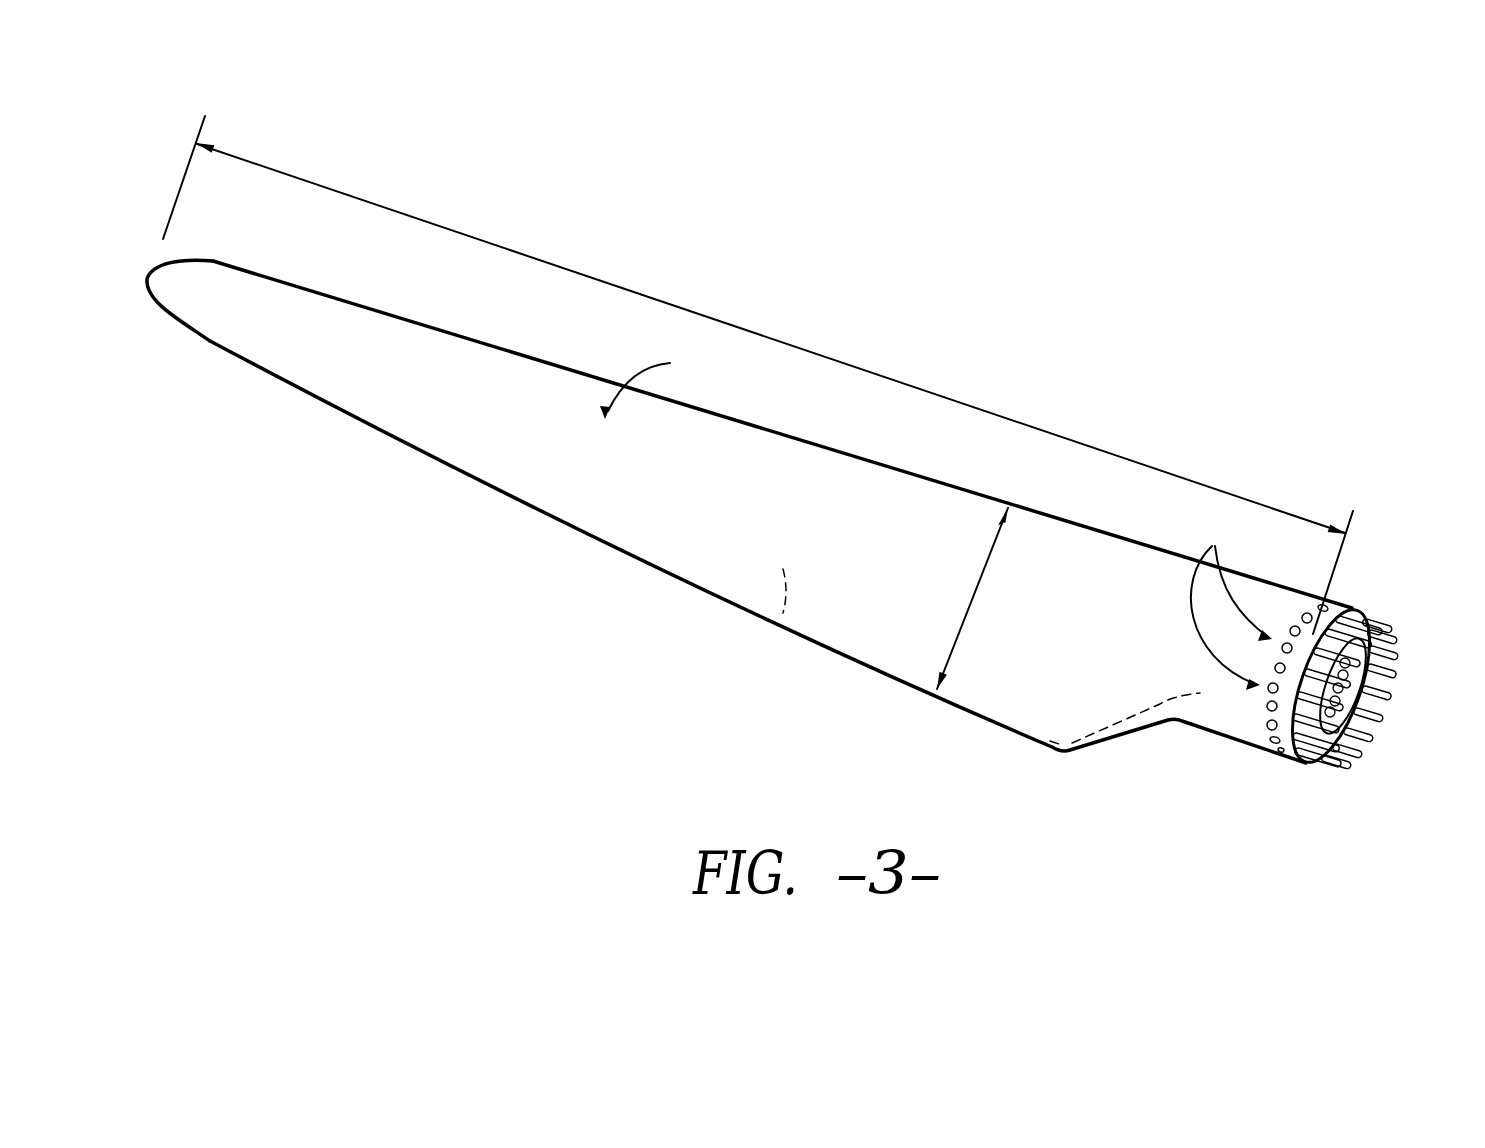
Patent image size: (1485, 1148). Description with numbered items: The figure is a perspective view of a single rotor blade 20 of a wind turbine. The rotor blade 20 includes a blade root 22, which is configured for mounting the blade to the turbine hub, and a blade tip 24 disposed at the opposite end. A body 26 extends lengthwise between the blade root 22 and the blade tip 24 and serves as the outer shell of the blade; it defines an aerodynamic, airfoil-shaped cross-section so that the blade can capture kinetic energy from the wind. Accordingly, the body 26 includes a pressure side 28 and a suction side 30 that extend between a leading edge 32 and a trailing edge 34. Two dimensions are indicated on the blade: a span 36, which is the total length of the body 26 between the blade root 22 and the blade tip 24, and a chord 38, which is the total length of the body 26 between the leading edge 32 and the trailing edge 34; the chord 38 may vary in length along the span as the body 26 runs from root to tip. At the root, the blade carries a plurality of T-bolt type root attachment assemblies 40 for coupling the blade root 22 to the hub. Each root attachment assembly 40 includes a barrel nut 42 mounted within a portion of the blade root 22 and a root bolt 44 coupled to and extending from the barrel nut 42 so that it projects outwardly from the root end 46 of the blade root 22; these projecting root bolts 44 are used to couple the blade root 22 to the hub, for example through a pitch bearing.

The rotor blade 20 is at (783, 514).
The blade root 22 is at (1257, 733).
The blade tip 24 is at (145, 273).
The body 26 is at (661, 382).
The pressure side 28 is at (780, 622).
The suction side 30 is at (483, 437).
The leading edge 32 is at (832, 450).
The trailing edge 34 is at (613, 543).
The span 36 is at (810, 348).
The chord 38 is at (968, 612).
The root attachment assembly 40 is at (1231, 598).
The barrel nut 42 is at (1398, 655).
The root bolt 44 is at (1300, 628).
The root end 46 is at (1314, 755).